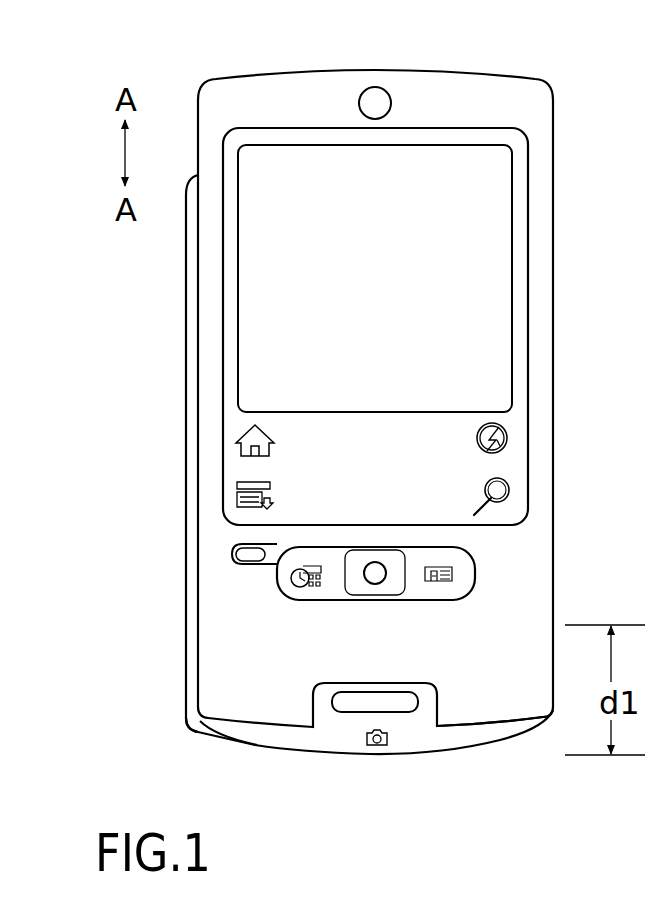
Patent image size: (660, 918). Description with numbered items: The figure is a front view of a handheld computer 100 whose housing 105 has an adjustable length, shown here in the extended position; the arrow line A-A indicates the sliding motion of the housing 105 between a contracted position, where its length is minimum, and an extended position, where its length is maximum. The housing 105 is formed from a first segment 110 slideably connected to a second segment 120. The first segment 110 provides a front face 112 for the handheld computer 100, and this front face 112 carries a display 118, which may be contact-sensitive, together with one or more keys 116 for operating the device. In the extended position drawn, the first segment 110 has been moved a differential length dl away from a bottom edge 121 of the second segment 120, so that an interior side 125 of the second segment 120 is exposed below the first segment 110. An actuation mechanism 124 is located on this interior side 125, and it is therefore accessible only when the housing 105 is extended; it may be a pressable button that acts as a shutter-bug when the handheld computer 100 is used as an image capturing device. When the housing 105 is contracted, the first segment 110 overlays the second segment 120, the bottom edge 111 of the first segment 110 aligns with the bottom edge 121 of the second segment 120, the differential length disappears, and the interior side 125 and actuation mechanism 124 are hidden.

The handheld computer 100 is at (242, 58).
The housing 105 is at (140, 383).
The first segment 110 is at (438, 60).
The bottom edge 111 is at (198, 663).
The front face 112 is at (537, 590).
The keys 116 is at (305, 592).
The display 118 is at (397, 290).
The second segment 120 is at (186, 731).
The bottom edge 121 is at (377, 754).
The actuation mechanism 124 is at (343, 708).
The interior side 125 is at (487, 720).